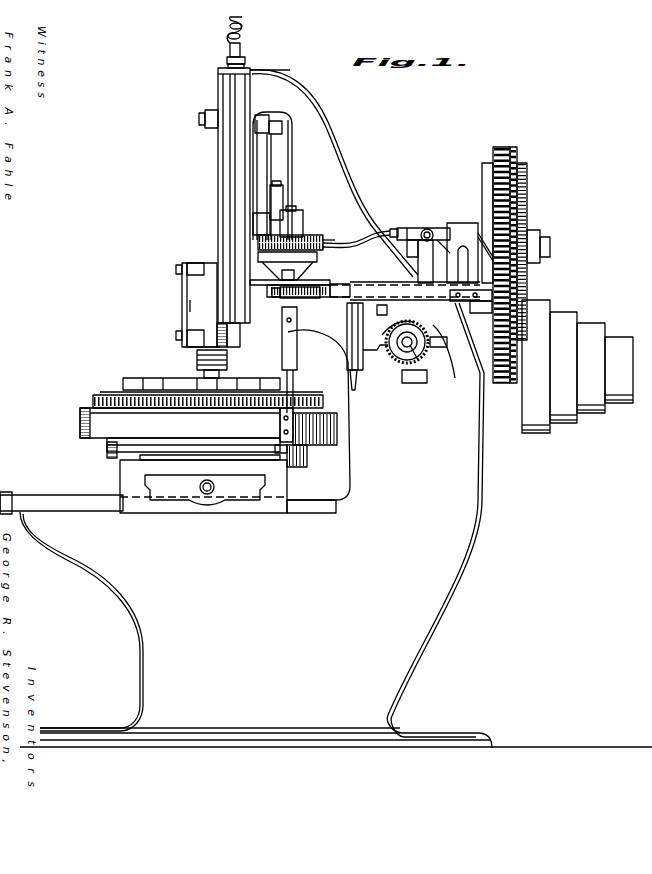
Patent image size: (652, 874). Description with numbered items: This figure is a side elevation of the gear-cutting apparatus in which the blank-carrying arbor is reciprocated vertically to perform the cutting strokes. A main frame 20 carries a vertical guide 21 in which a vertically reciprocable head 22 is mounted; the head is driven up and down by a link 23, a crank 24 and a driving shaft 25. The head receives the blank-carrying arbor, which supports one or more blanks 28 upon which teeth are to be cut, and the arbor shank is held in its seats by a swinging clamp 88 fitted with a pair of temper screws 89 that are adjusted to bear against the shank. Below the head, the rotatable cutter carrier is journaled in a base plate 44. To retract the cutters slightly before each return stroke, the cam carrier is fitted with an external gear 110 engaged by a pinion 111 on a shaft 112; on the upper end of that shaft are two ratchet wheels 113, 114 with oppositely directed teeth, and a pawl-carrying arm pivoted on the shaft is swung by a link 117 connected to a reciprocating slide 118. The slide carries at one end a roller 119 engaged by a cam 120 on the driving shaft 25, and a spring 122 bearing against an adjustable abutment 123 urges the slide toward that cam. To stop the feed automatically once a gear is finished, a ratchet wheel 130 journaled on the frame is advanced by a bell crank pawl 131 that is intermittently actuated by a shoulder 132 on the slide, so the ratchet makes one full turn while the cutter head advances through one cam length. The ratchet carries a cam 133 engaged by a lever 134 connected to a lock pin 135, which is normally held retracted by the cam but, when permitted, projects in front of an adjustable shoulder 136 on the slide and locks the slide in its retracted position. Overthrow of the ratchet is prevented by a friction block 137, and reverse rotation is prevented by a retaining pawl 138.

The main frame 20 is at (466, 510).
The vertical guide 21 is at (246, 92).
The vertically reciprocable head 22 is at (218, 153).
The link 23 is at (300, 157).
The crank 24 is at (290, 195).
The driving shaft 25 is at (408, 230).
The blank 28 is at (197, 358).
The base plate 44 is at (80, 429).
The swinging clamp 88 is at (182, 300).
The temper screws 89 is at (176, 269).
The external gear 110 is at (93, 400).
The pinion 111 is at (290, 450).
The shaft 112 is at (283, 371).
The ratchet wheel 113 is at (327, 232).
The ratchet wheel 114 is at (325, 250).
The link 117 is at (380, 228).
The reciprocating slide 118 is at (365, 281).
The roller 119 is at (498, 285).
The cam 120 is at (482, 186).
The spring 122 is at (312, 300).
The adjustable abutment 123 is at (270, 300).
The ratchet wheel 130 is at (400, 375).
The bell crank pawl 131 is at (444, 347).
The shoulder 132 is at (530, 307).
The cam 133 is at (418, 383).
The lever 134 is at (384, 365).
The lock pin 135 is at (347, 352).
The adjustable shoulder 136 is at (388, 313).
The friction block 137 is at (452, 358).
The retaining pawl 138 is at (420, 384).